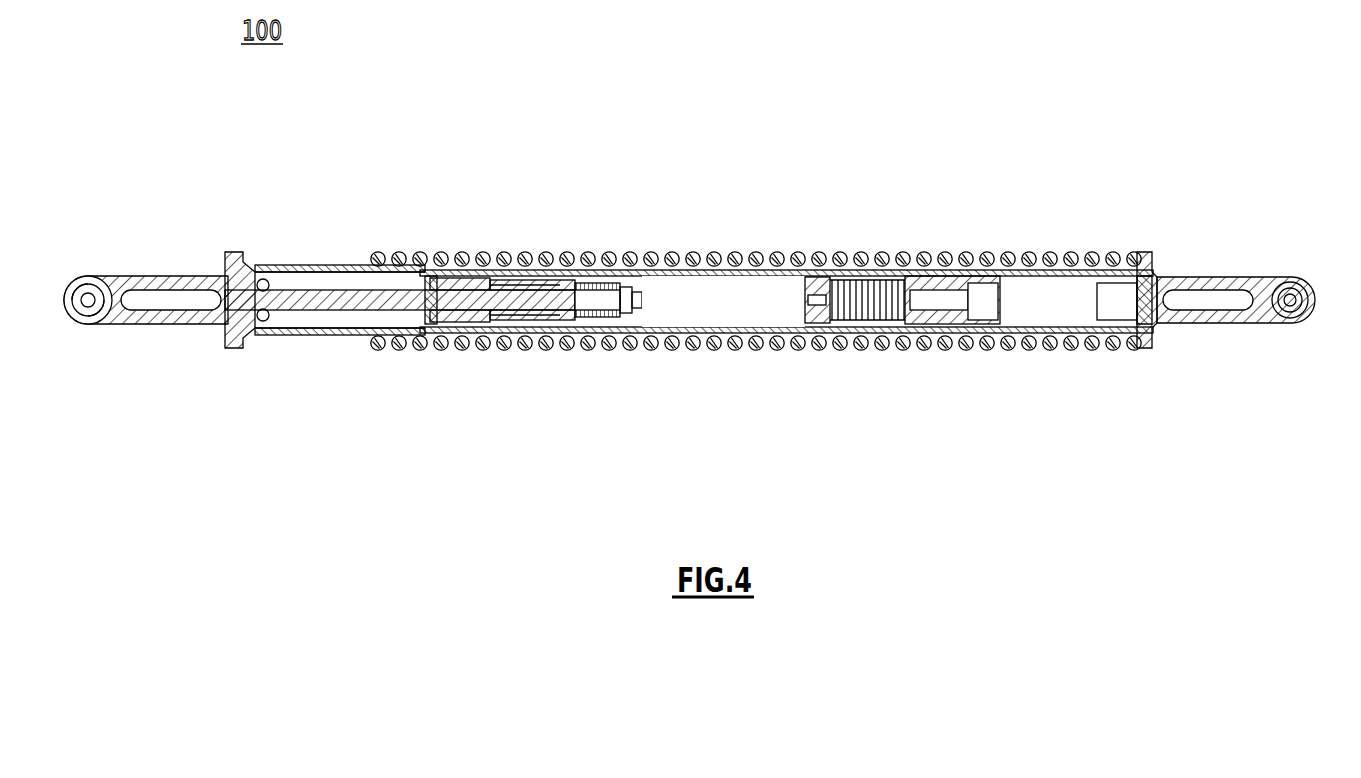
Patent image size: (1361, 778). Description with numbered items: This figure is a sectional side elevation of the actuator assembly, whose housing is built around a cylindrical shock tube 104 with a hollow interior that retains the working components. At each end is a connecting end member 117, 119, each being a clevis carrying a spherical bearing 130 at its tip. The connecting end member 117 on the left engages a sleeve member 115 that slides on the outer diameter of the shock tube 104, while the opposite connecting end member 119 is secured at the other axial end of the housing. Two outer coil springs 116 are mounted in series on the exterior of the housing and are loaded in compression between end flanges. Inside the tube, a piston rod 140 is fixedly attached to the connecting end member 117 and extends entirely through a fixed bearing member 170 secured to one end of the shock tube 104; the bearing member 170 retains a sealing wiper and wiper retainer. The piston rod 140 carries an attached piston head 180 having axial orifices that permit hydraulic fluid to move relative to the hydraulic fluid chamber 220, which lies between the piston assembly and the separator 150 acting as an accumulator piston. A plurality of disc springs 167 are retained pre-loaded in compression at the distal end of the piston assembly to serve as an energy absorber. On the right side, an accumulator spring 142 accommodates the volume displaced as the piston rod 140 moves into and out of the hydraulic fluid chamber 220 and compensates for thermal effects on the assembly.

The cylindrical shock tube 104 is at (645, 270).
The sleeve member 115 is at (308, 265).
The outer coil springs 116 is at (570, 262).
The connecting end member 117 is at (138, 278).
The connecting end member 119 is at (1205, 325).
The spherical bearing 130 is at (93, 318).
The piston rod 140 is at (322, 312).
The accumulator spring 142 is at (872, 262).
The separator 150 is at (800, 275).
The disc springs 167 is at (607, 332).
The bearing member 170 is at (478, 332).
The piston head 180 is at (545, 332).
The hydraulic fluid chamber 220 is at (782, 322).